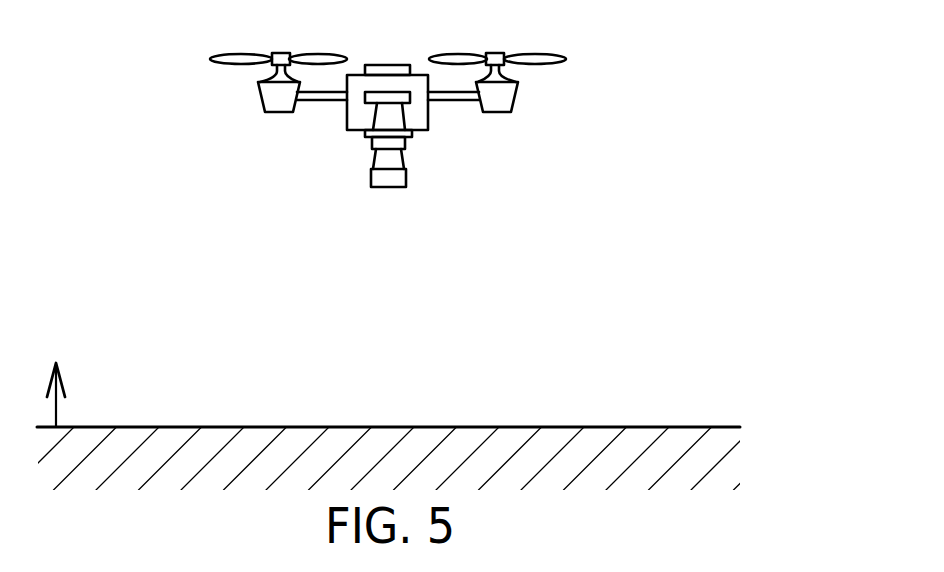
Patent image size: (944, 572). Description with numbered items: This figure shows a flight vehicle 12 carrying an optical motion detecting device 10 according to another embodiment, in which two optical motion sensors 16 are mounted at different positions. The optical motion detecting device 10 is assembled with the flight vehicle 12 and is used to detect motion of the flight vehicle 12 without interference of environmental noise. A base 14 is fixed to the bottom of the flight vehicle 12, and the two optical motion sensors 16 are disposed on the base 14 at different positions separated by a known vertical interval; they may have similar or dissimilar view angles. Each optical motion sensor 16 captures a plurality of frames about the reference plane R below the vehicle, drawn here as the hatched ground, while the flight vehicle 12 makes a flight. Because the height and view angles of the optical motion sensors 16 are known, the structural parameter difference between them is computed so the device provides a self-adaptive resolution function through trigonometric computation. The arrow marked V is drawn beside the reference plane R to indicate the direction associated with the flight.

The optical motion detecting device 10 is at (409, 121).
The flight vehicle 12 is at (387, 88).
The base 14 is at (407, 97).
The optical motion sensor 16 is at (410, 133).
The reference plane R is at (695, 427).
The velocity direction V is at (45, 395).